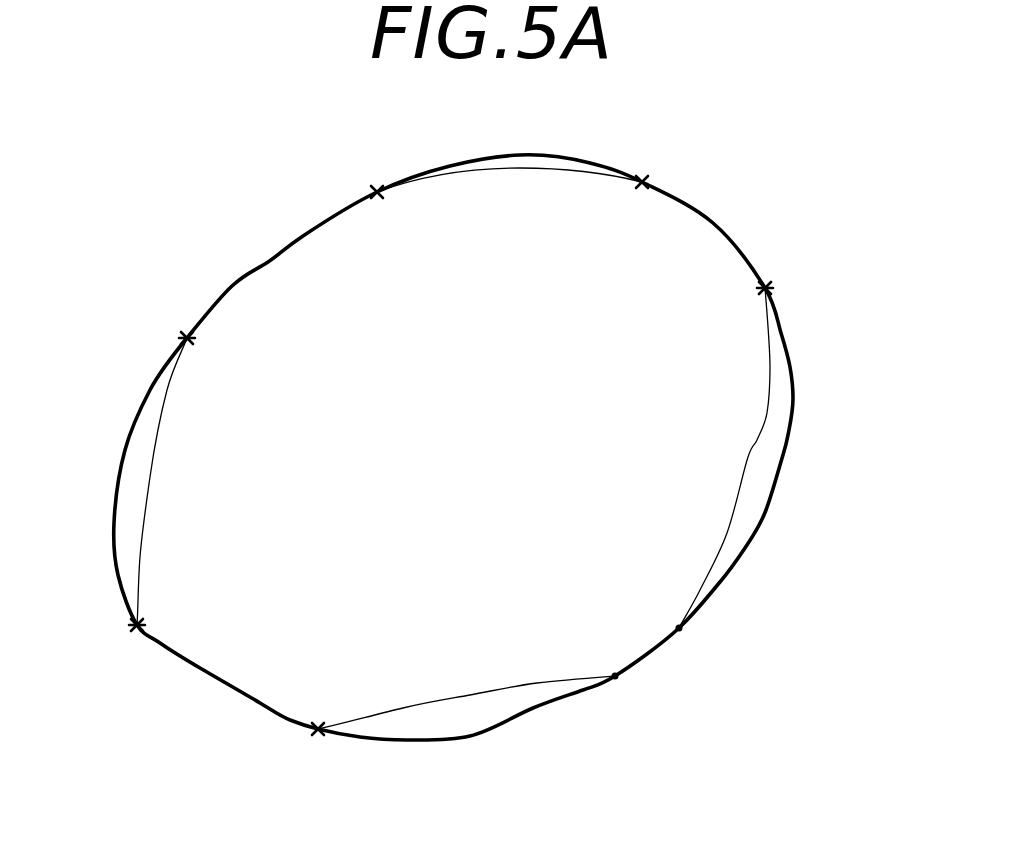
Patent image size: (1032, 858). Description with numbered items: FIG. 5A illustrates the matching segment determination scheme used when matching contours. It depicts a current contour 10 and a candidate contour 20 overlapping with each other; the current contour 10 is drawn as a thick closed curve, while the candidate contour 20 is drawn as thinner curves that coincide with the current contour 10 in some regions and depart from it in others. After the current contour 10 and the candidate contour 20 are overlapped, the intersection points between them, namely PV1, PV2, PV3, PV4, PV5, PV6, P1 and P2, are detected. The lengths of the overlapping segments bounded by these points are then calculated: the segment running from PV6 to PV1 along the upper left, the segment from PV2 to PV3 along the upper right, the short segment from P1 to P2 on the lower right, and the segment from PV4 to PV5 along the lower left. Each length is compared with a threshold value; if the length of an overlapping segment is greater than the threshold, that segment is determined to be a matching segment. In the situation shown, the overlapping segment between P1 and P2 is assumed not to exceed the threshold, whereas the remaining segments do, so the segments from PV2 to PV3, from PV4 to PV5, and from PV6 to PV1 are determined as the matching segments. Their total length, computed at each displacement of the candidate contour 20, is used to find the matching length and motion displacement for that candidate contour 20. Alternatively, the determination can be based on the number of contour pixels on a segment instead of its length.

The current contour 10 is at (787, 440).
The candidate contour 20 is at (727, 533).
The intersection point PV1 is at (352, 167).
The intersection point PV2 is at (667, 158).
The intersection point PV3 is at (804, 279).
The intersection point PV4 is at (314, 755).
The intersection point PV5 is at (98, 632).
The intersection point PV6 is at (149, 324).
The intersection point P1 is at (706, 645).
The intersection point P2 is at (631, 699).